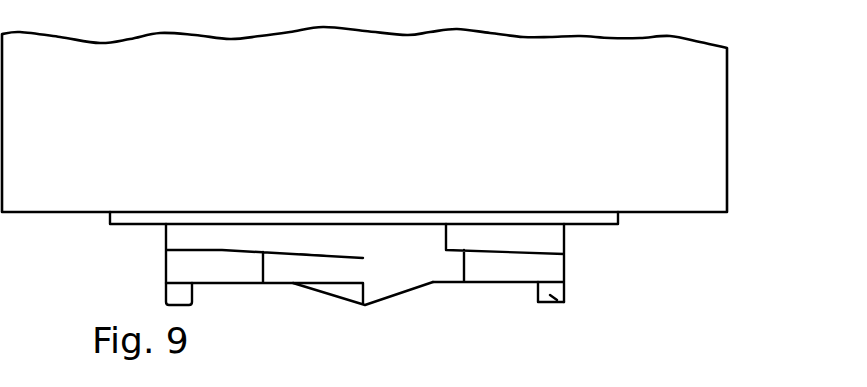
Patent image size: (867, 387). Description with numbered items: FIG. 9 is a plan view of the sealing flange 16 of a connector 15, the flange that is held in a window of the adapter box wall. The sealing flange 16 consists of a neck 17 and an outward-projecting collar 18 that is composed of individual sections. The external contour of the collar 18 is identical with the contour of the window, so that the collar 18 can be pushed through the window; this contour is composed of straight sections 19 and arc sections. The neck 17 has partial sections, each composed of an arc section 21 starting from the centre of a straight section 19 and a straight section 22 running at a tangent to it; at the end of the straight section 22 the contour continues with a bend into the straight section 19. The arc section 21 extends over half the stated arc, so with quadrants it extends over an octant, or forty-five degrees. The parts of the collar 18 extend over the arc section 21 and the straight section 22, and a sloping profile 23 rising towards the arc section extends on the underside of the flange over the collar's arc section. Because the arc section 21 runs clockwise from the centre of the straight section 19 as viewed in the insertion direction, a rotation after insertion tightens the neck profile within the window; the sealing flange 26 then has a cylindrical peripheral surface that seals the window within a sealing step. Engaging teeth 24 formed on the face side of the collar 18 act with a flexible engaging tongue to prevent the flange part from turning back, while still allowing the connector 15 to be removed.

The connector 15 is at (727, 140).
The sealing flange 16 is at (378, 262).
The neck 17 is at (166, 238).
The collar 18 is at (237, 275).
The straight section 19 is at (420, 248).
The arc section 21 is at (295, 240).
The straight section 22 is at (189, 242).
The sloping profile 23 is at (310, 255).
The engaging teeth 24 is at (368, 300).
The sealing flange 26 is at (619, 225).